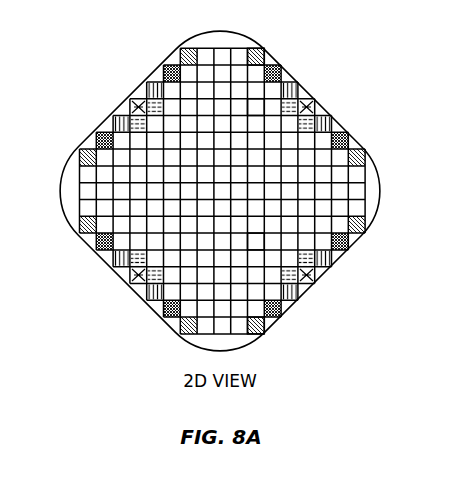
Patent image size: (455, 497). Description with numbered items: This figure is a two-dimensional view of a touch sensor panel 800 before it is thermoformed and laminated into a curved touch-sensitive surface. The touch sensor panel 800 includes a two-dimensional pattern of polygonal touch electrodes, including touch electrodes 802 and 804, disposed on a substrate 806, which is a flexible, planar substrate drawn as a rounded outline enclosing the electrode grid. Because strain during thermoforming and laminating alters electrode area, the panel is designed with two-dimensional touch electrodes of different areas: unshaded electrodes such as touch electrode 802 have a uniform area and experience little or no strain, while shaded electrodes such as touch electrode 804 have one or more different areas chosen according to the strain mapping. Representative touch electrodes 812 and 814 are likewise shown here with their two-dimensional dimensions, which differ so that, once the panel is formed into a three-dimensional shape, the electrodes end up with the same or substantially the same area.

The touch sensor panel 800 is at (244, 191).
The touch electrode 802 is at (252, 108).
The touch electrode 804 is at (268, 59).
The substrate 806 is at (367, 187).
The touch electrode 812 is at (257, 240).
The touch electrode 814 is at (266, 323).